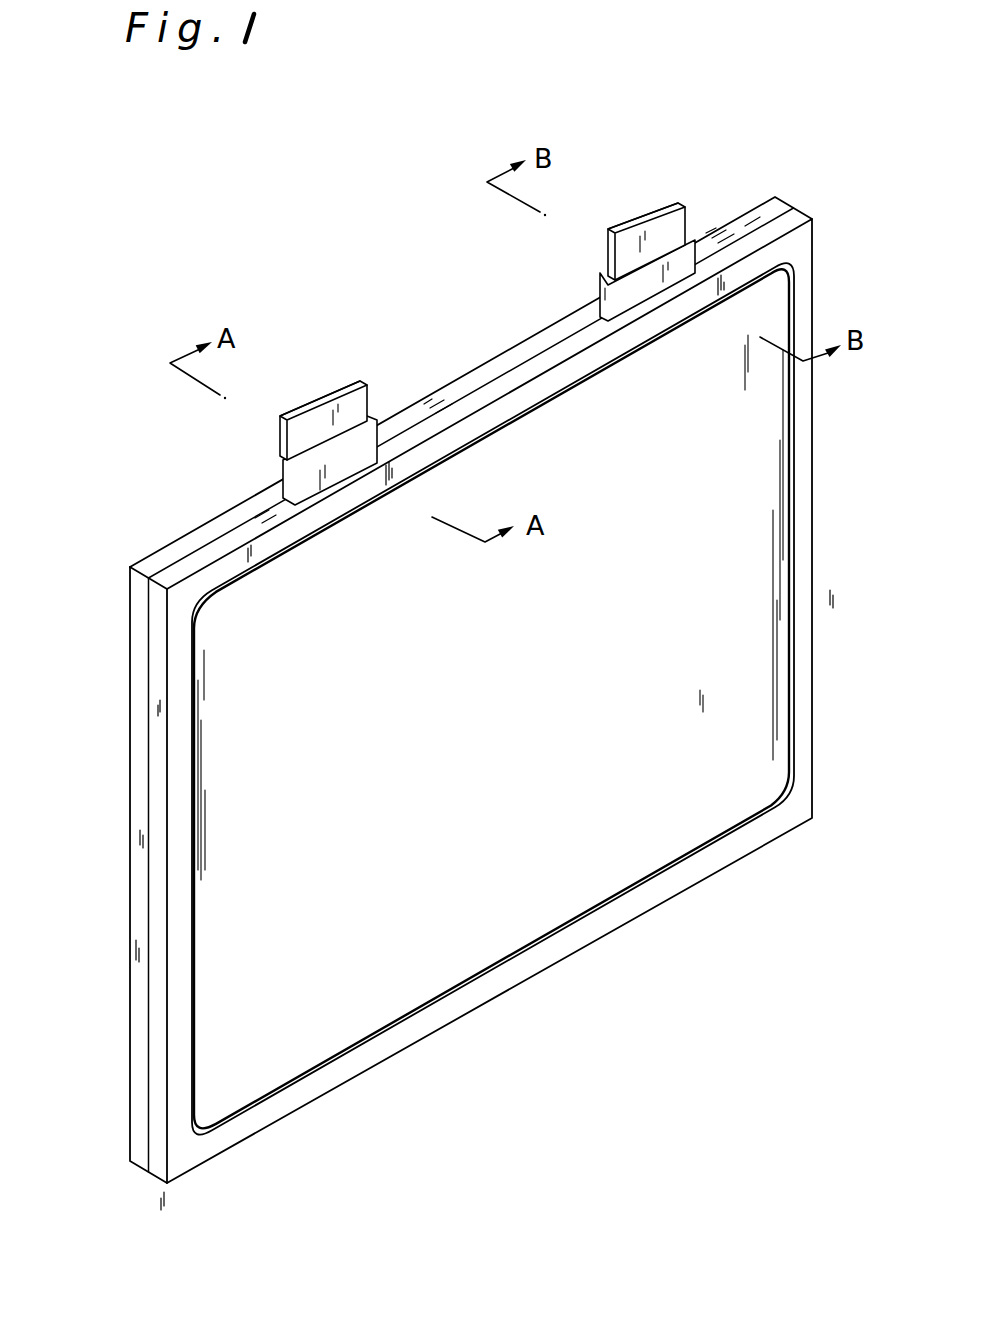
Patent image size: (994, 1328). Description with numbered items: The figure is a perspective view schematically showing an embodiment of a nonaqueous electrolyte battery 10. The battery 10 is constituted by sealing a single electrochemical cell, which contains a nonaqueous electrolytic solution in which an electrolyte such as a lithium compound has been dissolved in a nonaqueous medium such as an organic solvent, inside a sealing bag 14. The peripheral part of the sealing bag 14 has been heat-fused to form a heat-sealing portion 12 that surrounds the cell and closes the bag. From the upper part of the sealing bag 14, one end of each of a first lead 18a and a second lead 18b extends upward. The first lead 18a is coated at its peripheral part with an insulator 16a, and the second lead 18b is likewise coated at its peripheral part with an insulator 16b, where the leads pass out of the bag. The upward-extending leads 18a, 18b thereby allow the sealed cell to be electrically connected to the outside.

The nonaqueous electrolyte battery 10 is at (466, 684).
The heat-sealing portion 12 is at (806, 523).
The sealing bag 14 is at (768, 722).
The insulator 16a is at (370, 440).
The insulator 16b is at (690, 258).
The first lead 18a is at (342, 395).
The second lead 18b is at (640, 224).